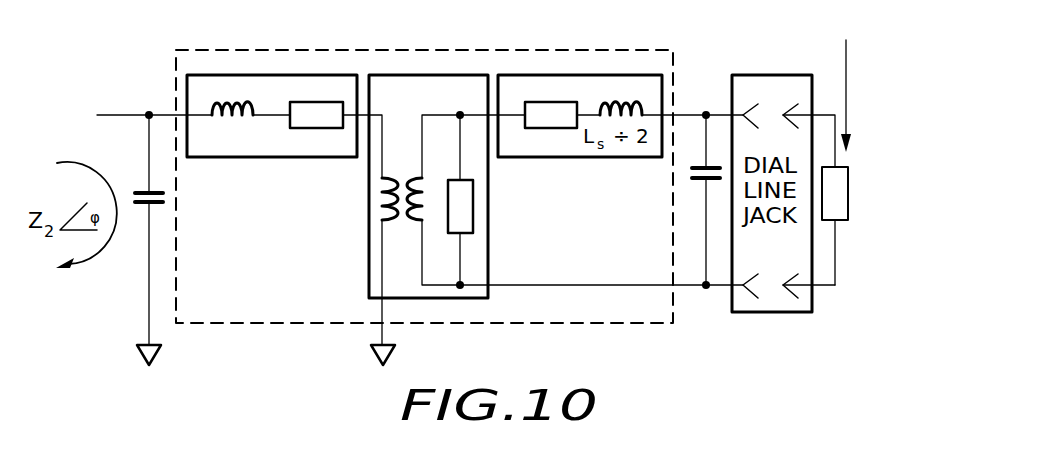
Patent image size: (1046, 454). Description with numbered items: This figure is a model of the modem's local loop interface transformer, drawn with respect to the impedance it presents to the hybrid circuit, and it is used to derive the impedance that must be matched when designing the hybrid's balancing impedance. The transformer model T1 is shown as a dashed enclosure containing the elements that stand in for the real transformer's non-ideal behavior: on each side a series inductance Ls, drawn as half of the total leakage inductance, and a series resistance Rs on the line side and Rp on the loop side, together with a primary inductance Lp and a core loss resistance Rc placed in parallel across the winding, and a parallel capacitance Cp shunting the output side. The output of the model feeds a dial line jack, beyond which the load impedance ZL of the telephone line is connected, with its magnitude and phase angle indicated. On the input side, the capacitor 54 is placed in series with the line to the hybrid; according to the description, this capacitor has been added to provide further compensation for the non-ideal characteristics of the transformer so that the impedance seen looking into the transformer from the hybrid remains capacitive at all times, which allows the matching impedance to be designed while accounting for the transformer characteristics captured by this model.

The capacitor 54 is at (137, 193).
The transformer model T1 is at (424, 186).
The core loss resistor Rc is at (451, 200).
The series resistor Rs is at (316, 131).
The series resistor Rp is at (542, 127).
The load impedance ZL is at (859, 33).
The series inductance Ls/2 Ls is at (233, 126).
The primary inductance Lp is at (402, 183).
The parallel capacitor Cp is at (699, 200).